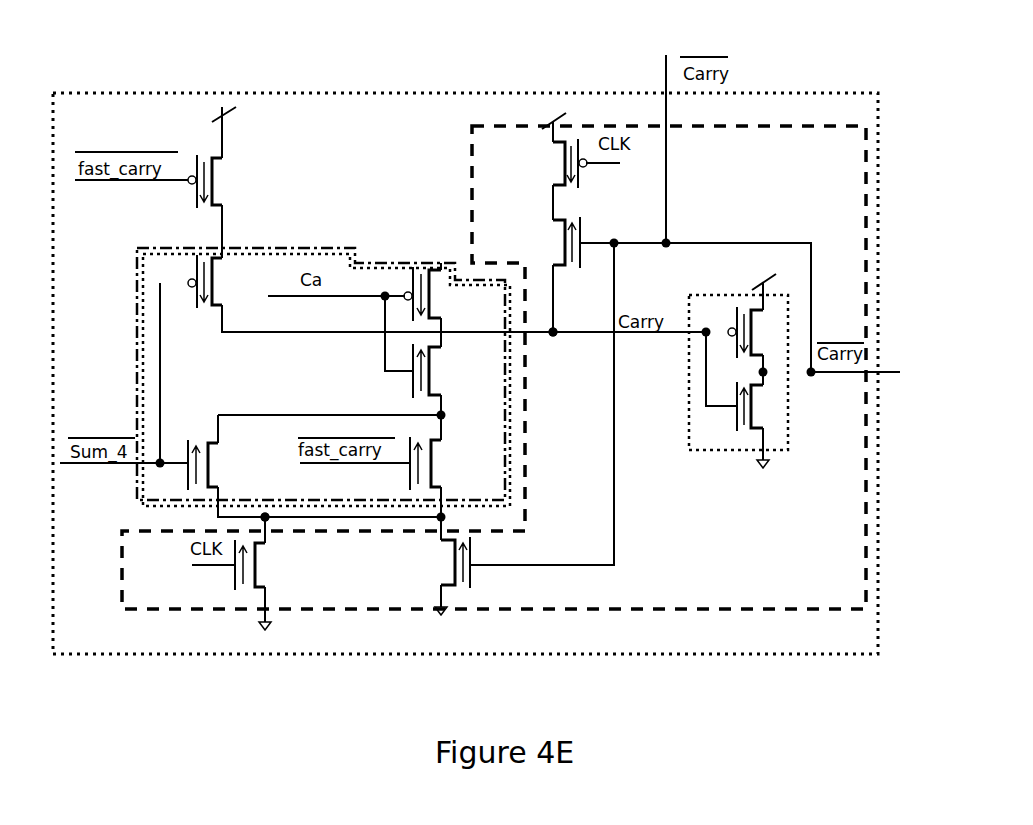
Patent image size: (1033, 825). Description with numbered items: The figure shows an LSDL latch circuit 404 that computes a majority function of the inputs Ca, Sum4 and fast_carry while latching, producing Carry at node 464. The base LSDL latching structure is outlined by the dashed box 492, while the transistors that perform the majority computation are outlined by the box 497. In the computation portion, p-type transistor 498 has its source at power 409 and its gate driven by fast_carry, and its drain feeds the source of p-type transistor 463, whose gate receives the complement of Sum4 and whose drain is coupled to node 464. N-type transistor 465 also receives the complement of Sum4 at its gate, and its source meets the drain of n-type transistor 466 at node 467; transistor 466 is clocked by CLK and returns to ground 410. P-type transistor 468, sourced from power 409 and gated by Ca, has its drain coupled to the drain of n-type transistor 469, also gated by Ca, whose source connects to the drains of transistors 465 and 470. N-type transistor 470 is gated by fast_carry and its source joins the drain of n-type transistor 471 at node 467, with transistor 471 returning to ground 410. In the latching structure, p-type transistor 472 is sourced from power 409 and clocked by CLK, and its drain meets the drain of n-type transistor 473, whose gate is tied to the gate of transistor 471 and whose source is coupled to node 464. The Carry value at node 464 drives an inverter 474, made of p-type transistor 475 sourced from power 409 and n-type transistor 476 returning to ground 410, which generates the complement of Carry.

The LSDL latch circuit 404 is at (492, 93).
The box 492 is at (670, 610).
The box 497 is at (317, 246).
The power 409 is at (445, 262).
The p-type transistor 498 is at (214, 188).
The p-type transistor 463 is at (212, 290).
The n-type transistor 465 is at (210, 455).
The p-type transistor 468 is at (433, 300).
The n-type transistor 469 is at (433, 372).
The n-type transistor 470 is at (433, 467).
The n-type transistor 466 is at (257, 565).
The n-type transistor 471 is at (455, 567).
The p-type transistor 472 is at (562, 168).
The n-type transistor 473 is at (562, 245).
The p-type transistor 475 is at (750, 326).
The n-type transistor 476 is at (752, 404).
The inverter 474 is at (688, 435).
The node 464 is at (556, 336).
The node 467 is at (267, 515).
The ground 410 is at (272, 628).